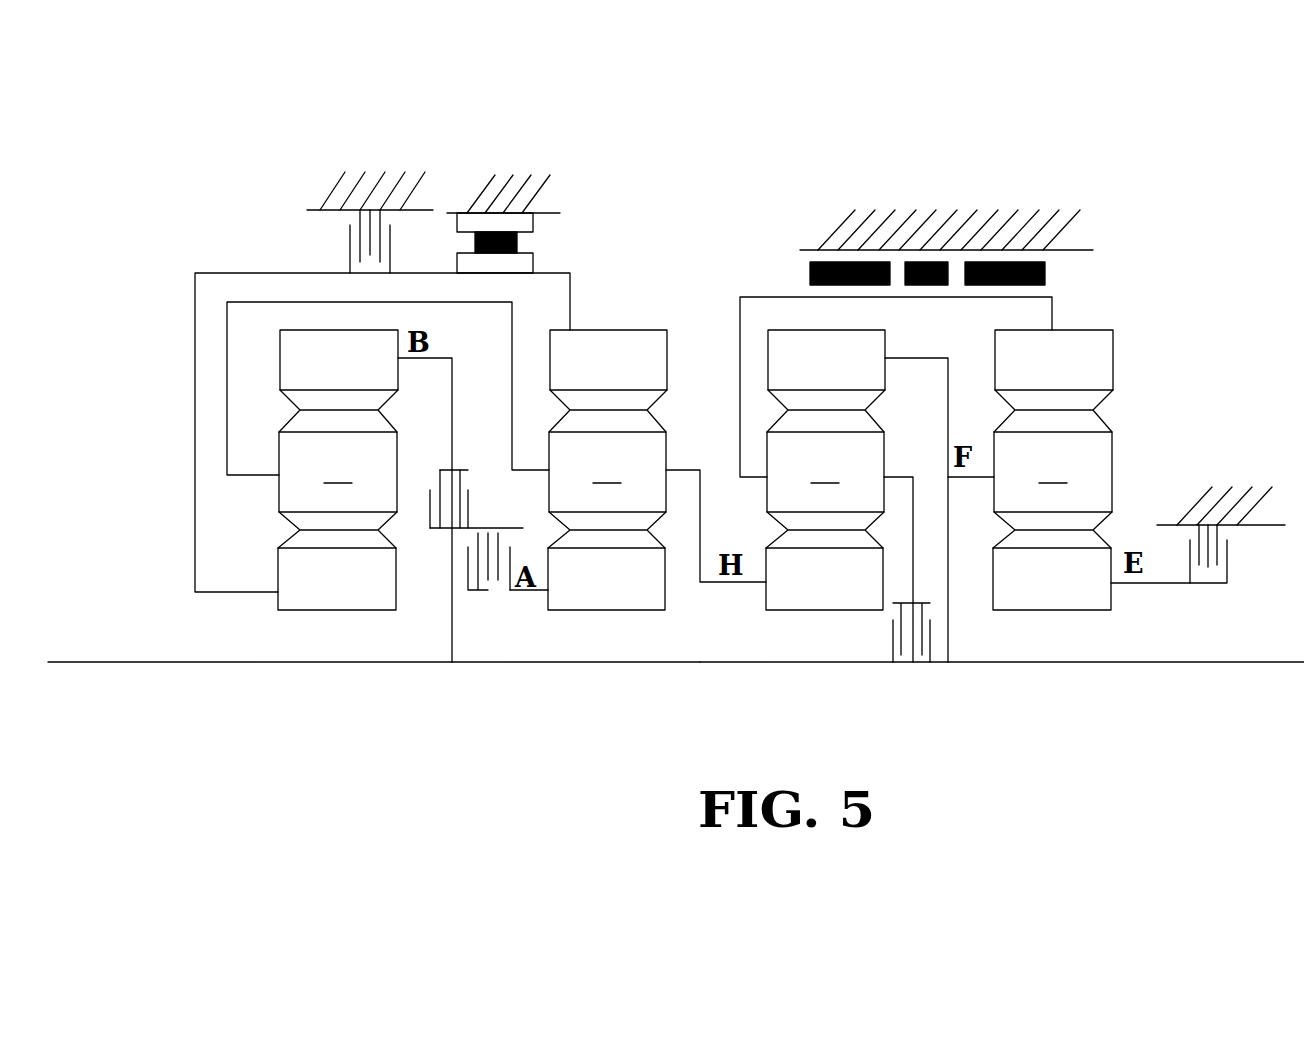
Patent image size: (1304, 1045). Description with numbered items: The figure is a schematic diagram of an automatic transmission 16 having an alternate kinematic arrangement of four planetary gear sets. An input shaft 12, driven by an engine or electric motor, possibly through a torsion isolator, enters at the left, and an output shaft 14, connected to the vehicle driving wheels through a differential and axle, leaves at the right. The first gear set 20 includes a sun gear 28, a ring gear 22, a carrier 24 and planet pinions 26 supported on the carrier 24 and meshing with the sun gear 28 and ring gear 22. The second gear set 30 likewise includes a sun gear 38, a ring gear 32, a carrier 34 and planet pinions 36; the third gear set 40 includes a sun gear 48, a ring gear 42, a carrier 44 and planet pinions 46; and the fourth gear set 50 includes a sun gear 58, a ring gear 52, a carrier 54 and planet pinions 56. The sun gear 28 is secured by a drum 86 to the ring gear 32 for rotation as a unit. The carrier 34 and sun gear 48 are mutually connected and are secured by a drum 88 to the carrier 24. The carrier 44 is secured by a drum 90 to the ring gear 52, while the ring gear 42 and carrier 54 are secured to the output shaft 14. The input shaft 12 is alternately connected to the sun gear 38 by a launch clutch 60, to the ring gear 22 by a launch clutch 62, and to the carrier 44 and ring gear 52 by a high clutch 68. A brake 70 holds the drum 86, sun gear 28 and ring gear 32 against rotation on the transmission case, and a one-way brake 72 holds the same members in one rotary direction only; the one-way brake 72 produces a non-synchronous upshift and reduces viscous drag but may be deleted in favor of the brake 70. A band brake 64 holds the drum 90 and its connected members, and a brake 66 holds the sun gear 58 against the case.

The input shaft 12 is at (77, 663).
The output shaft 14 is at (1232, 665).
The automatic transmission 16 is at (660, 256).
The first gear set 20 is at (326, 483).
The ring gear 22 is at (300, 352).
The carrier 24 is at (240, 477).
The planet pinions 26 is at (338, 472).
The sun gear 28 is at (373, 597).
The second gear set 30 is at (622, 481).
The ring gear 32 is at (640, 348).
The carrier 34 is at (690, 470).
The planet pinions 36 is at (607, 472).
The sun gear 38 is at (637, 590).
The third gear set 40 is at (818, 482).
The ring gear 42 is at (852, 352).
The carrier 44 is at (757, 480).
The planet pinions 46 is at (825, 472).
The sun gear 48 is at (860, 597).
The fourth gear set 50 is at (984, 436).
The ring gear 52 is at (1013, 348).
The carrier 54 is at (972, 478).
The planet pinions 56 is at (1053, 472).
The sun gear 58 is at (1092, 590).
The launch clutch 60 is at (490, 567).
The launch clutch 62 is at (448, 497).
The band brake 64 is at (808, 268).
The brake 66 is at (1213, 547).
The clutch 68 is at (932, 630).
The brake 70 is at (370, 252).
The one-way brake 72 is at (525, 227).
The drum 86 is at (257, 270).
The drum 88 is at (465, 308).
The drum 90 is at (750, 290).